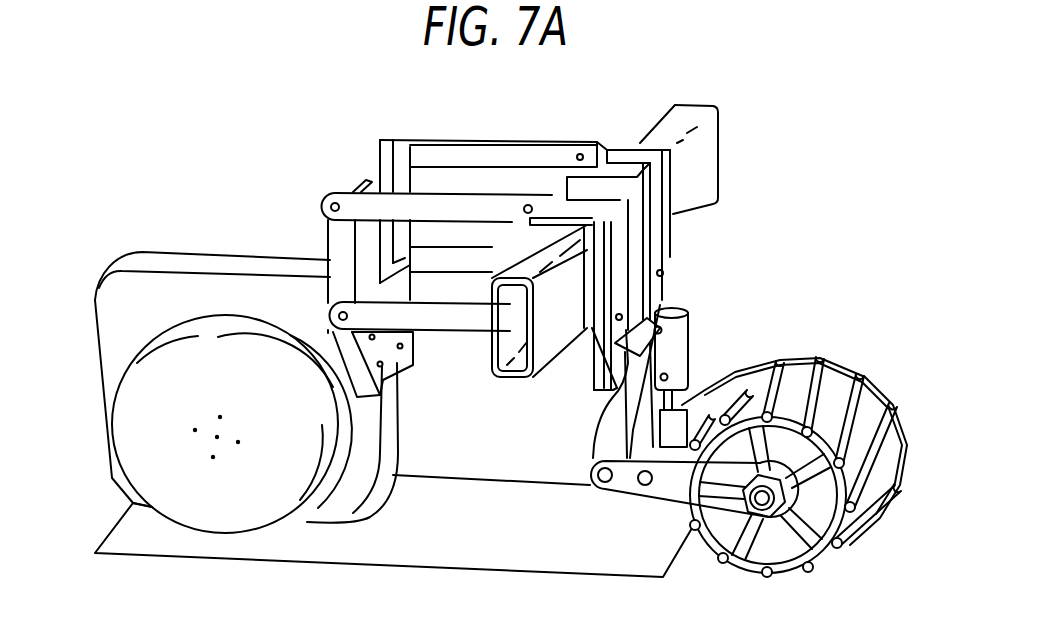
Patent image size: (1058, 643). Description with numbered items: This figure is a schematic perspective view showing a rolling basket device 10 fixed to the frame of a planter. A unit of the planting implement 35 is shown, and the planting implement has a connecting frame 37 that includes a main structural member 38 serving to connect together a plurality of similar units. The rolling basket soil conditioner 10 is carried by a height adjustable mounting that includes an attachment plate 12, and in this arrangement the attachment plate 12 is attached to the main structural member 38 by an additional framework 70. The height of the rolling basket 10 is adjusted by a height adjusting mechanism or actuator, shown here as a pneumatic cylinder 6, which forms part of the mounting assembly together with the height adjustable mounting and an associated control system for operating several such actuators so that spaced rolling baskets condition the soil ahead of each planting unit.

The pneumatic cylinder 6 is at (673, 370).
The rolling basket soil conditioner 10 is at (845, 353).
The attachment plate 12 is at (668, 310).
The planting implement 35 is at (170, 240).
The connecting frame 37 is at (527, 133).
The main structural member 38 is at (680, 106).
The additional framework 70 is at (657, 230).